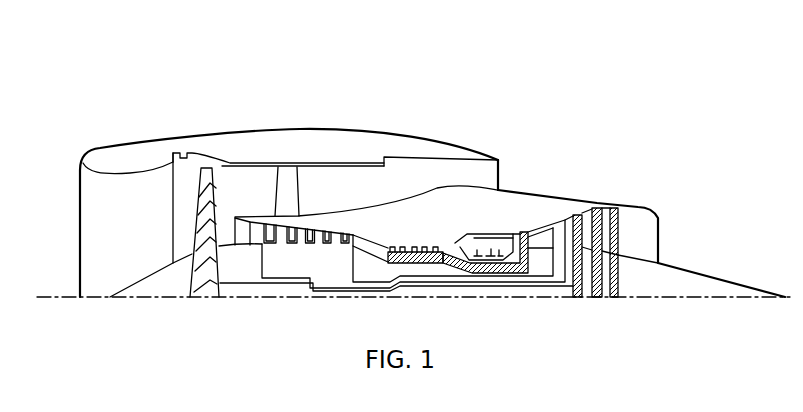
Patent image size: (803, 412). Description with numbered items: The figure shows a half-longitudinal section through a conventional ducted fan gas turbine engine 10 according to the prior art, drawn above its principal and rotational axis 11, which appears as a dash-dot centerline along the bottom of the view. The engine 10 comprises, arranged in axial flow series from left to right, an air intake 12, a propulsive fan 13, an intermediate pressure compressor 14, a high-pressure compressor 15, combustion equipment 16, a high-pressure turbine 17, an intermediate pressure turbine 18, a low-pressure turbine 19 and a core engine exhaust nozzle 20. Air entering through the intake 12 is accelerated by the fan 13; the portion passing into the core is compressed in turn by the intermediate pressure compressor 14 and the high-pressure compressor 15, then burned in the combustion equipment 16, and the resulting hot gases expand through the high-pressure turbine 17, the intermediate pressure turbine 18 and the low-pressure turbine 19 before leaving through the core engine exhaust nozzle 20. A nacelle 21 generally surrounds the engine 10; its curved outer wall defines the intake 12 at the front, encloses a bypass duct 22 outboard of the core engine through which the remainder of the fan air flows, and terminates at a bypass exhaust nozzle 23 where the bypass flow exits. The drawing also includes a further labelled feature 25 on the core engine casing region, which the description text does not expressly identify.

The ducted fan gas turbine engine 10 is at (616, 89).
The principal and rotational axis 11 is at (67, 297).
The air intake 12 is at (95, 173).
The propulsive fan 13 is at (203, 177).
The intermediate pressure compressor 14 is at (313, 227).
The high-pressure compressor 15 is at (413, 248).
The combustion equipment 16 is at (475, 255).
The high-pressure turbine 17 is at (523, 230).
The intermediate pressure turbine 18 is at (557, 222).
The low-pressure turbine 19 is at (595, 208).
The core engine exhaust nozzle 20 is at (647, 217).
The nacelle 21 is at (143, 142).
The bypass duct 22 is at (335, 180).
The bypass exhaust nozzle 23 is at (498, 160).
The core engine casing 25 is at (437, 188).